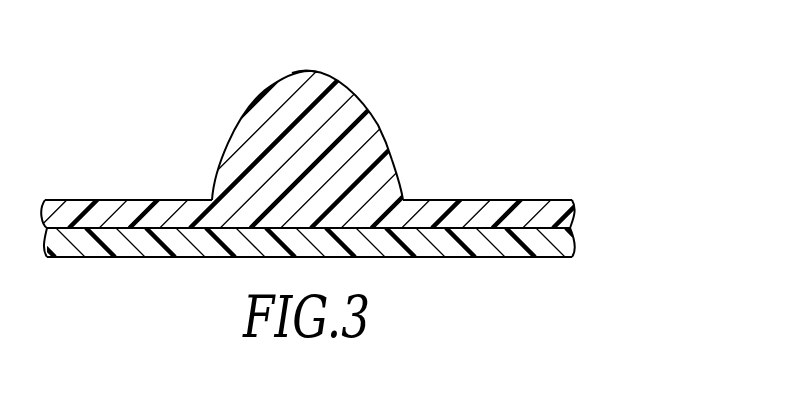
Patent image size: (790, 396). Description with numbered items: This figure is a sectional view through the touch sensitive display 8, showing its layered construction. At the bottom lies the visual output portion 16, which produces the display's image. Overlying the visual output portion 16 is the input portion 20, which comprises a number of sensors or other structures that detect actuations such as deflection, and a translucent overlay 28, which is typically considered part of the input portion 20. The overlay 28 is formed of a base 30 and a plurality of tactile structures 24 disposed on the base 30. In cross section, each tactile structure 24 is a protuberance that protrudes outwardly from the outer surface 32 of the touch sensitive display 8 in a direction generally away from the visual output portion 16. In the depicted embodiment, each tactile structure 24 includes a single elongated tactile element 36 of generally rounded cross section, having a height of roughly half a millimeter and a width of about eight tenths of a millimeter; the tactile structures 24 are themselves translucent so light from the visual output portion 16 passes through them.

The touch sensitive display 8 is at (373, 139).
The visual output portion 16 is at (575, 245).
The input portion 20 is at (478, 199).
The tactile structure 24 is at (358, 82).
The overlay 28 is at (436, 172).
The base 30 is at (88, 199).
The outer surface 32 is at (168, 199).
The tactile element 36 is at (292, 70).